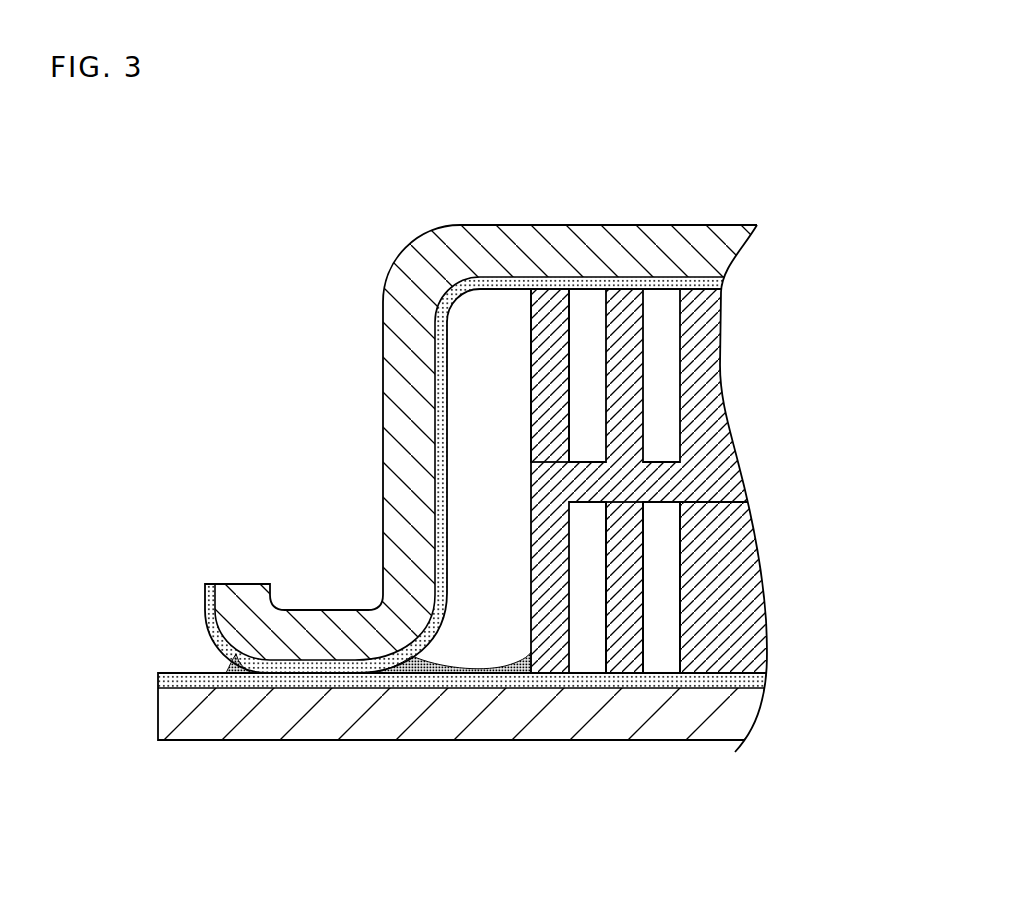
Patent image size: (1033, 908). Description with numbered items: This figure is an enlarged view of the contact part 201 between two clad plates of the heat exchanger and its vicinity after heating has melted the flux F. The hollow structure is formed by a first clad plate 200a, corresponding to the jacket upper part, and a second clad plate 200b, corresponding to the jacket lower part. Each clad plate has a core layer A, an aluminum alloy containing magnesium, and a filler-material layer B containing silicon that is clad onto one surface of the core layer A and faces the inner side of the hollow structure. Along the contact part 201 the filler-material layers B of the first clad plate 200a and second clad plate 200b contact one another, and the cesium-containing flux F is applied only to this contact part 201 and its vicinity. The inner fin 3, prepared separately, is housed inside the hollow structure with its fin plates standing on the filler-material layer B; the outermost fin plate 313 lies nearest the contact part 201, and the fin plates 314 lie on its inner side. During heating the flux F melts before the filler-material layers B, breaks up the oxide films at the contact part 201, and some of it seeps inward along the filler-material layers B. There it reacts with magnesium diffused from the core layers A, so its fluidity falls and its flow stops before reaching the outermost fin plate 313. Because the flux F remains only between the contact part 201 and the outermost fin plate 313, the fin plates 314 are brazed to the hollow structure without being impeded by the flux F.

The first clad plate 200a is at (533, 248).
The second clad plate 200b is at (657, 723).
The core layer A is at (603, 250).
The filler-material layer B is at (668, 284).
The inner fin 3 is at (700, 368).
The outermost fin plate 313 is at (558, 371).
The fin plate 314 is at (630, 543).
The flux F is at (248, 665).
The contact part 201 is at (322, 683).